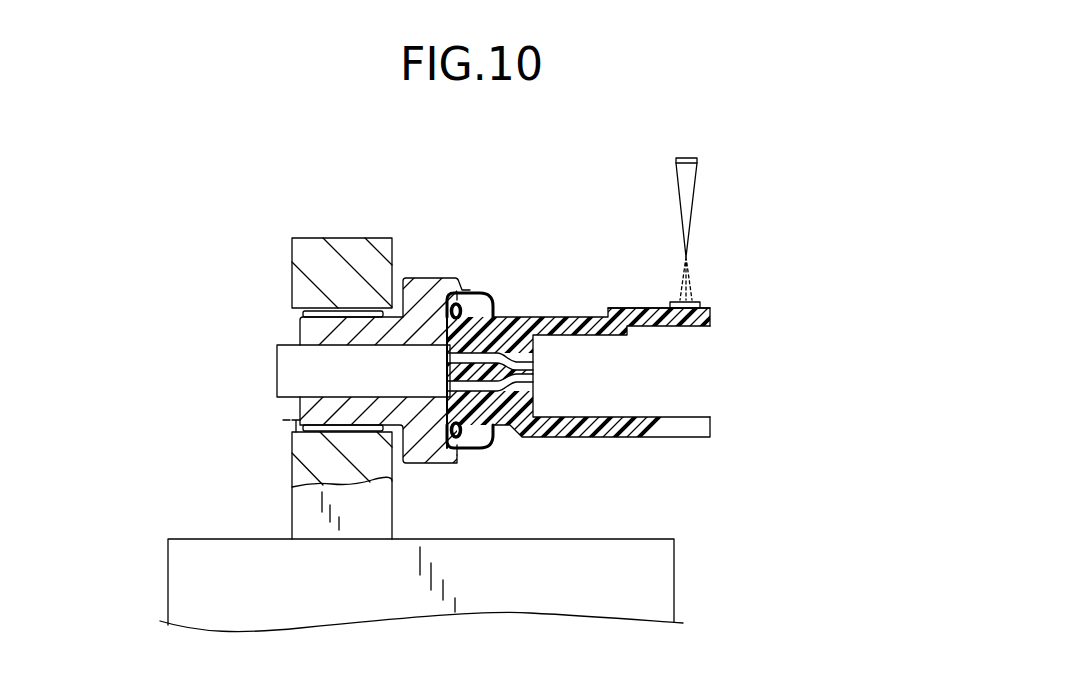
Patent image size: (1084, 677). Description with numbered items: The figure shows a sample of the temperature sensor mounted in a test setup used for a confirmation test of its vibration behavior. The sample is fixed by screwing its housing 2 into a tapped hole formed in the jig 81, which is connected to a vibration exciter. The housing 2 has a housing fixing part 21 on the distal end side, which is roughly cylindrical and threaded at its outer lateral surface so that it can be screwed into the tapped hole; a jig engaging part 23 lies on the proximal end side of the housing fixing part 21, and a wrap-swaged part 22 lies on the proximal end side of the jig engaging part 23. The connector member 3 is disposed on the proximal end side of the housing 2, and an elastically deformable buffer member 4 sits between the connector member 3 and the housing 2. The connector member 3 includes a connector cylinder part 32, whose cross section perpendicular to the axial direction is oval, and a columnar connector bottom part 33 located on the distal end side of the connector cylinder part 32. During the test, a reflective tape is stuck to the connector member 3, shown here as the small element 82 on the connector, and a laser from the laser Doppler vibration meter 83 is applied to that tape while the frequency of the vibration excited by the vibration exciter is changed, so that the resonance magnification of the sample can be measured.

The housing 2 is at (418, 275).
The connector member 3 is at (618, 307).
The buffer member 4 is at (458, 282).
The housing fixing part 21 is at (285, 422).
The wrap-swaged part 22 is at (495, 297).
The jig engaging part 23 is at (438, 275).
The connector cylinder part 32 is at (637, 307).
The connector bottom part 33 is at (523, 317).
The jig 81 is at (303, 237).
The welding target 82 is at (697, 302).
The laser Doppler vibration meter 83 is at (687, 170).